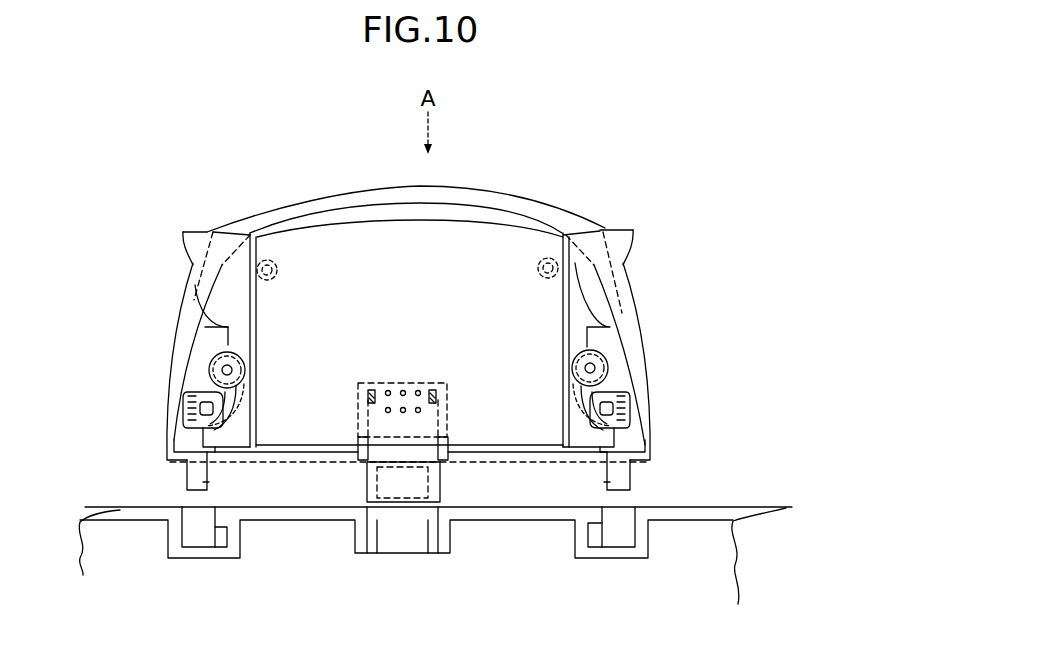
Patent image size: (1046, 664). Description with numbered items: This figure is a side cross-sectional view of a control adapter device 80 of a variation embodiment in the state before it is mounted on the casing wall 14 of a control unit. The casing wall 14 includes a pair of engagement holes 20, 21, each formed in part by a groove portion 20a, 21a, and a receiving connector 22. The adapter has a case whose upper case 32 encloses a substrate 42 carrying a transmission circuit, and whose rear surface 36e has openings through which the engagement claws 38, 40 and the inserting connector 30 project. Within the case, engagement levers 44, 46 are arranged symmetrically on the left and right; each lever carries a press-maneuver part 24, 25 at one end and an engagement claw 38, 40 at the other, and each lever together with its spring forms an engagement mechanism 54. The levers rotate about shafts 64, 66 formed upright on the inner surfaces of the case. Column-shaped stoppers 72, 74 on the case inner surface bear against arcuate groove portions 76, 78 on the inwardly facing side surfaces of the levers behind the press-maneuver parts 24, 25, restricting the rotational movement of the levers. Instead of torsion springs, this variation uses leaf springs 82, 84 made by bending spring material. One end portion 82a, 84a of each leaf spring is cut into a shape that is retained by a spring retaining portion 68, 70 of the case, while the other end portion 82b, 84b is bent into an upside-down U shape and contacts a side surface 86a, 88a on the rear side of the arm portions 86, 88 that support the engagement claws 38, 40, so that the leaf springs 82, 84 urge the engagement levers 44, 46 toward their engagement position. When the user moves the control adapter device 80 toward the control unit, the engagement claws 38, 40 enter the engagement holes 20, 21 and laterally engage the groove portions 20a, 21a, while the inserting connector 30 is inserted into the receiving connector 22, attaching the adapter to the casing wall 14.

The casing wall 14 is at (731, 507).
The engagement hole 20 is at (192, 549).
The groove portion 20a is at (221, 548).
The engagement hole 21 is at (620, 549).
The groove portion 21a is at (596, 530).
The receiving connector 22 is at (402, 554).
The press-maneuver part 24 is at (185, 231).
The press-maneuver part 25 is at (636, 234).
The inserting connector 30 is at (441, 485).
The upper case 32 is at (527, 200).
The rear surface 36e is at (521, 463).
The engagement claw 38 is at (210, 482).
The engagement claw 40 is at (606, 480).
The substrate 42 is at (384, 203).
The engagement lever 44 is at (209, 222).
The engagement lever 46 is at (621, 218).
The engagement mechanism 54 is at (150, 302).
The shaft 64 is at (210, 366).
The shaft 66 is at (608, 364).
The spring retaining portion 68 is at (188, 411).
The spring retaining portion 70 is at (625, 410).
The stopper 72 is at (278, 268).
The stopper 74 is at (537, 268).
The arcuate groove portion 76 is at (193, 277).
The arcuate groove portion 78 is at (576, 262).
The control adapter device 80 is at (475, 182).
The leaf spring 82 is at (232, 398).
The end portion 82a is at (196, 400).
The end portion 82b is at (222, 410).
The leaf spring 84 is at (585, 400).
The end portion 84a is at (618, 402).
The end portion 84b is at (600, 410).
The arm portion 86 is at (182, 458).
The side surface 86a is at (210, 430).
The arm portion 88 is at (632, 452).
The side surface 88a is at (605, 430).